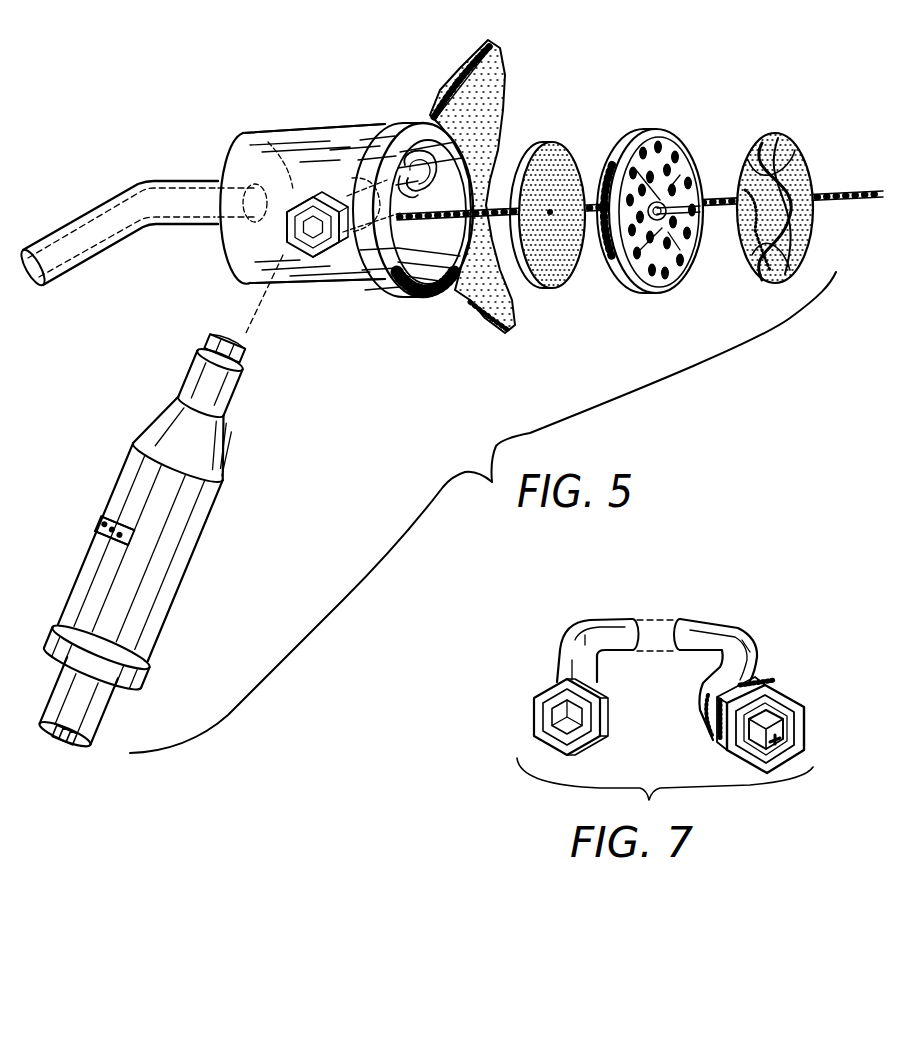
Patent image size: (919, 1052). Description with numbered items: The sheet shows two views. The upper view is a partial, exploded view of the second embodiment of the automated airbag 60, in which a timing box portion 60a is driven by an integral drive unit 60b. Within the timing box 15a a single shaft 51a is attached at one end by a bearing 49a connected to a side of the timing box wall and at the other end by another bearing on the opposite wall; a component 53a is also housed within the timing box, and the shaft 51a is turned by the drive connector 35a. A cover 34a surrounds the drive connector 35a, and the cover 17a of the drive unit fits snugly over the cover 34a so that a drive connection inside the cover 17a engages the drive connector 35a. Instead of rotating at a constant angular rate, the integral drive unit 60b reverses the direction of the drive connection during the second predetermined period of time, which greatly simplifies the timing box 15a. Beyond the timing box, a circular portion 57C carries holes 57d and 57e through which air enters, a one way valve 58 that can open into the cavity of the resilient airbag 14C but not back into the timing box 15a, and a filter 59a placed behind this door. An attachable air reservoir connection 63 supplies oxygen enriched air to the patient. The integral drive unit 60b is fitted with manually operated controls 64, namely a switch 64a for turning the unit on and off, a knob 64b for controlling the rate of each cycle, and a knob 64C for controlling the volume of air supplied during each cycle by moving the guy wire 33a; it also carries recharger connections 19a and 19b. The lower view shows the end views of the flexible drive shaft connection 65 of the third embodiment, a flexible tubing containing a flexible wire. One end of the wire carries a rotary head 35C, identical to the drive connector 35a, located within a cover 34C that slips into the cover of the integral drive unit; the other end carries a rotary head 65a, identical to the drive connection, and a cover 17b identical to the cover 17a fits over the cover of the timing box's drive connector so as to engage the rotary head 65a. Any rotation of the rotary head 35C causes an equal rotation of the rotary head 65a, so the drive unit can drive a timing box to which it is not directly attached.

In FIG. 5, the resilient airbag 14C is at (462, 57).
In FIG. 5, the timing box 15a is at (297, 140).
In FIG. 5, the cover 17a is at (243, 343).
In FIG. 7, the cover 17b is at (777, 697).
In FIG. 5, the recharger connection 19a is at (77, 752).
In FIG. 5, the recharger connection 19b is at (50, 742).
In FIG. 5, the guy wire 33a is at (420, 225).
In FIG. 5, the cover 34a is at (343, 260).
In FIG. 7, the cover 34C is at (547, 687).
In FIG. 5, the drive connector 35a is at (283, 250).
In FIG. 7, the rotary head 35C is at (547, 747).
In FIG. 5, the bearing 49a is at (400, 127).
In FIG. 5, the shaft 51a is at (418, 226).
In FIG. 5, the internal ring 53a is at (356, 183).
In FIG. 5, the circular portion 57C is at (653, 127).
In FIG. 5, the hole 57d is at (697, 180).
In FIG. 5, the hole 57e is at (678, 137).
In FIG. 5, the one way valve 58 is at (780, 133).
In FIG. 5, the filter 59a is at (547, 140).
In FIG. 5, the tool assembly 60 is at (345, 380).
In FIG. 5, the upper assembly 60a is at (212, 128).
In FIG. 5, the integral drive unit 60b is at (113, 458).
In FIG. 5, the attachable air reservoir connection 63 is at (95, 226).
In FIG. 5, the manually operated controls 64 is at (100, 540).
In FIG. 5, the switch 64a is at (100, 517).
In FIG. 5, the knob 64b is at (107, 547).
In FIG. 5, the knob 64C is at (130, 527).
In FIG. 7, the flexible drive shaft connection 65 is at (652, 596).
In FIG. 7, the rotary head 65a is at (803, 723).